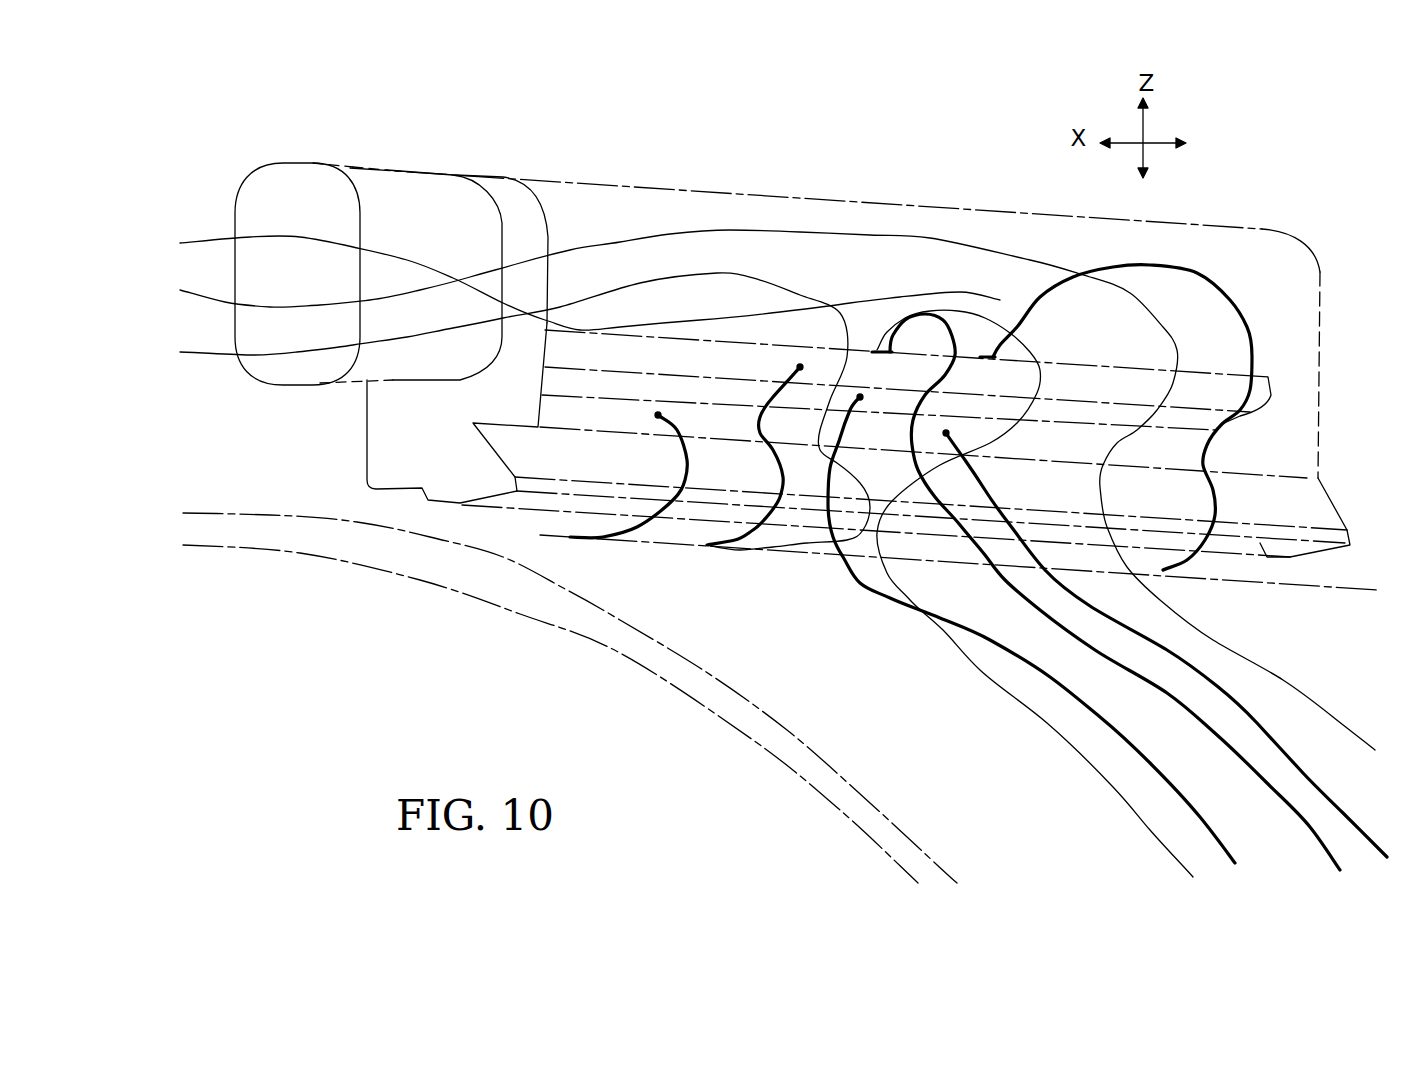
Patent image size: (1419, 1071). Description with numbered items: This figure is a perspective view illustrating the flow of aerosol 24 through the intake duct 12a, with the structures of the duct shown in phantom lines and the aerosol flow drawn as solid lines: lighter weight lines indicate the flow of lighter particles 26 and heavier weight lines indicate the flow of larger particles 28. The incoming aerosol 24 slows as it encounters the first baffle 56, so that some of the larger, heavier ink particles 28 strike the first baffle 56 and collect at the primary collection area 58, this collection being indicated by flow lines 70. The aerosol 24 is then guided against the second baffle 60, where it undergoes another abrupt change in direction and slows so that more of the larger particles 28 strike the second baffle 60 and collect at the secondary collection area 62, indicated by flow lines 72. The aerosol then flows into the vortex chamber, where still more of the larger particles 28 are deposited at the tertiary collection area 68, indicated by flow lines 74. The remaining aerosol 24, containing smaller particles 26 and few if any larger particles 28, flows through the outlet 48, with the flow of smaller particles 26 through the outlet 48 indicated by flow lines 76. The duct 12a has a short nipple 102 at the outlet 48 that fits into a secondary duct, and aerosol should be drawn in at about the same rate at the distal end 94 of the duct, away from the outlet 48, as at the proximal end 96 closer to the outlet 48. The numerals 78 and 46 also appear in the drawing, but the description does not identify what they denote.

The nipple 102 is at (405, 167).
The proximal end 96 is at (505, 190).
The aerosol 24 is at (663, 222).
The duct 12a is at (1262, 200).
The distal end 94 is at (1322, 298).
The outlet 48 is at (477, 250).
The lighter particles 26 is at (603, 248).
The flow lines 76 is at (888, 303).
The tertiary collection area 68 is at (922, 317).
The secondary collection area 62 is at (800, 367).
The primary collection area 58 is at (658, 415).
The second baffle 60 is at (535, 400).
The first baffle 56 is at (366, 408).
The larger particles 28 is at (778, 468).
The flange 78 is at (1272, 396).
The rail line 46 is at (550, 500).
The flow lines 70 is at (640, 532).
The flow lines 72 is at (733, 545).
The flow lines 74 is at (1033, 607).